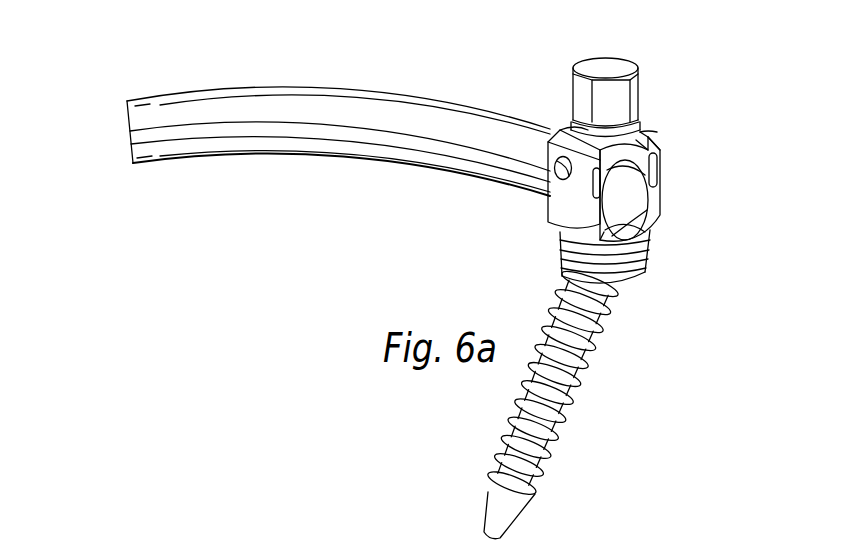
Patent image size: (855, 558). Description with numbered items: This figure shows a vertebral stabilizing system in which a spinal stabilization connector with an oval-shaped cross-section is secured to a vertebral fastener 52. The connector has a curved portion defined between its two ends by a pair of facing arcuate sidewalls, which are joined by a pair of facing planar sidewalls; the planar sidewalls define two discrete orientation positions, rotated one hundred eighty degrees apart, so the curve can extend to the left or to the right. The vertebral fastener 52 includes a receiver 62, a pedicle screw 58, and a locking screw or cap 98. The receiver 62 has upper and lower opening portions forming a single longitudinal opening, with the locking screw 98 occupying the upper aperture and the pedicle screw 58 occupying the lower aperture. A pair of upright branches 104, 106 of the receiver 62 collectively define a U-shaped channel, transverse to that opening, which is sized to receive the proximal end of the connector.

The locking screw 98 is at (607, 67).
The vertebral fastener 52 is at (617, 275).
The upright branch 106 is at (655, 197).
The upright branch 104 is at (558, 212).
The receiver 62 is at (553, 222).
The pedicle screw 58 is at (585, 391).